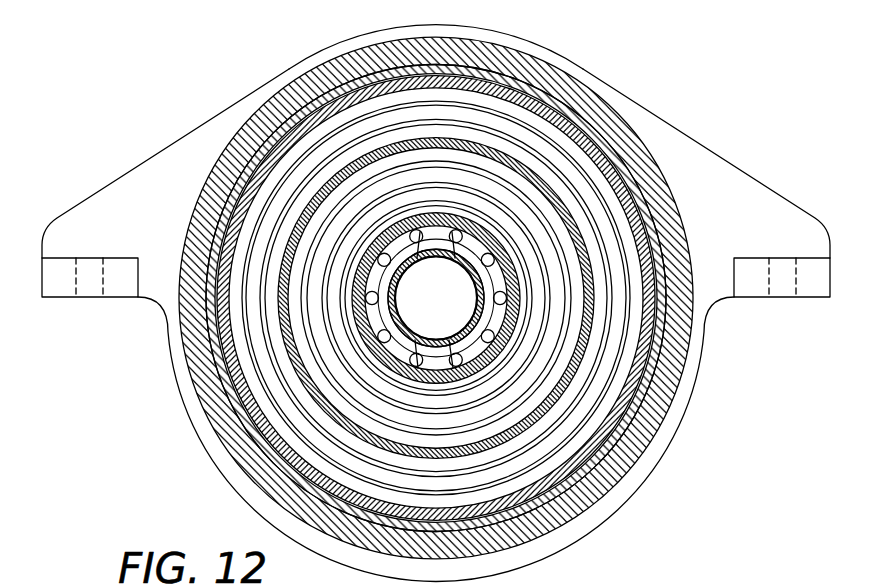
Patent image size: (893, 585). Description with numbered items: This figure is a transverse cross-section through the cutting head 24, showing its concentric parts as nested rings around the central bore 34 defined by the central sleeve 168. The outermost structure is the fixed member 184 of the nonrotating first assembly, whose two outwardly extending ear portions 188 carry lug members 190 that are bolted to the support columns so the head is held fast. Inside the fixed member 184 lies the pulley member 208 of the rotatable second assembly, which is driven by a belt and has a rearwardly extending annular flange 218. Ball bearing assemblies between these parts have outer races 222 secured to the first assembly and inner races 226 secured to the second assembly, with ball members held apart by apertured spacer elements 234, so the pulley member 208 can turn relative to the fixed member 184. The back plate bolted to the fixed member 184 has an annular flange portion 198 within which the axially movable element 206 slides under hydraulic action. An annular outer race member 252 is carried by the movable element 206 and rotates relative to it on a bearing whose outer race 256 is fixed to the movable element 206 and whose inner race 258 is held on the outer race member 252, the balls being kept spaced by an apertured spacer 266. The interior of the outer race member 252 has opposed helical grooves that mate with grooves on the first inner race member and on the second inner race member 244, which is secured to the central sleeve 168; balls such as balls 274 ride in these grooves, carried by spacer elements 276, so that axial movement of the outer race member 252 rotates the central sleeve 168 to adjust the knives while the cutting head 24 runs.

The cutting head 24 is at (627, 73).
The ear portions 188 is at (97, 200).
The lug members 190 is at (115, 265).
The pulley member 208 is at (257, 113).
The fixed member 184 is at (302, 113).
The outer races 222 is at (382, 101).
The apertured spacer elements 234 is at (418, 117).
The inner races 226 is at (474, 136).
The rearwardly extending annular flange 218 is at (497, 152).
The annular flange portion 198 is at (571, 248).
The axially movable element 206 is at (559, 277).
The outer race 256 is at (550, 309).
The apertured spacer 266 is at (473, 318).
The spacer elements 276 is at (378, 312).
The annular outer race member 252 is at (386, 306).
The inner race 258 is at (424, 341).
The balls 274 is at (471, 274).
The central sleeve 168 is at (476, 311).
The second inner race member 244 is at (456, 263).
The central bore 34 is at (476, 298).